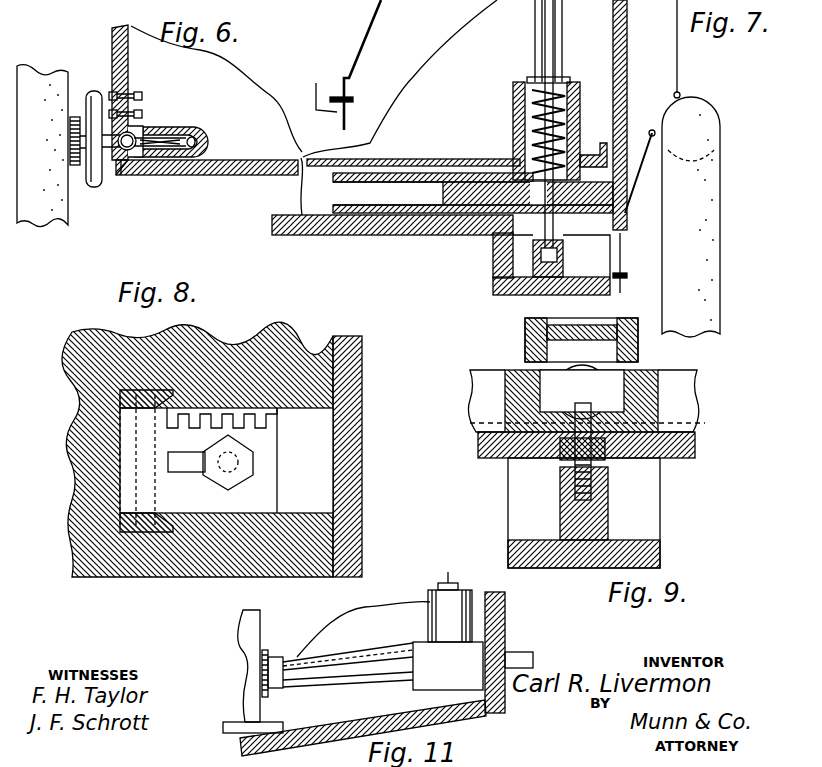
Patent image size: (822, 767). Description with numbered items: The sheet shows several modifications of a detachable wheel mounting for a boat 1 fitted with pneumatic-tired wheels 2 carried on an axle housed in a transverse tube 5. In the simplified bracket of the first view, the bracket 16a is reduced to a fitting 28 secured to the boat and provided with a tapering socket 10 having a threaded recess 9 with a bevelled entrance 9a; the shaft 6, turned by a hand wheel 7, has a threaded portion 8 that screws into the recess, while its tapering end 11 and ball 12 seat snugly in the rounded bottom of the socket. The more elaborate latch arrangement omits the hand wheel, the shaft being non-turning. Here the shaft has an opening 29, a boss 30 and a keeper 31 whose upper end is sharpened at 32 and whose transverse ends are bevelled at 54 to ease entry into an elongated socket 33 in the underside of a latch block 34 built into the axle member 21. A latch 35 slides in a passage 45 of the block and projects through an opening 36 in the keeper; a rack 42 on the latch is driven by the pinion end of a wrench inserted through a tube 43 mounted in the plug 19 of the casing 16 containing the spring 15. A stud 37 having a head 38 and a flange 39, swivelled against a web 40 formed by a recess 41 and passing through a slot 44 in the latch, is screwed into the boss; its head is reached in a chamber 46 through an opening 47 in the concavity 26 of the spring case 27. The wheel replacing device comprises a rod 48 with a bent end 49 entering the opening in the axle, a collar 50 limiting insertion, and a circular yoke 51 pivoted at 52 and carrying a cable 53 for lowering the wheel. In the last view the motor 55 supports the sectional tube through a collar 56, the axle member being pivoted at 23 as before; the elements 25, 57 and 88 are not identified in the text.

In FIG. 6, the boat 1 is at (111, 36).
In FIG. 7, the boat 1 is at (628, 44).
In FIG. 8, the boat 1 is at (350, 362).
In FIG. 11, the boat 1 is at (506, 612).
In FIG. 6, the pneumatic-tired wheel 2 is at (42, 136).
In FIG. 7, the tube 5 is at (355, 159).
In FIG. 11, the tube 5 is at (330, 662).
In FIG. 6, the shaft 6 is at (115, 172).
In FIG. 7, the shaft 6 is at (670, 283).
In FIG. 9, the shaft 6 is at (650, 556).
In FIG. 11, the shaft 6 is at (530, 652).
In FIG. 6, the hand wheel 7 is at (90, 185).
In FIG. 6, the threaded portion 8 is at (163, 174).
In FIG. 7, the threaded portion 8 is at (634, 206).
In FIG. 6, the threaded recess 9 is at (135, 137).
In FIG. 7, the threaded recess 9 is at (598, 127).
In FIG. 9, the threaded recess 9 is at (562, 320).
In FIG. 6, the bevelled entrance 9a is at (138, 162).
In FIG. 11, the bevelled entrance 9a is at (510, 672).
In FIG. 6, the tapering socket 10 is at (215, 133).
In FIG. 6, the tapering end 11 is at (186, 176).
In FIG. 6, the ball 12 is at (205, 142).
In FIG. 7, the spring 15 is at (582, 80).
In FIG. 7, the casing 16 is at (520, 84).
In FIG. 11, the casing 16 is at (428, 600).
In FIG. 6, the bracket 16a is at (140, 110).
In FIG. 11, the bracket 16a is at (478, 596).
In FIG. 7, the plug 19 is at (528, 78).
In FIG. 11, the plug 19 is at (447, 580).
In FIG. 7, the axle member 21 is at (388, 172).
In FIG. 9, the axle member 21 is at (555, 384).
In FIG. 11, the axle member 21 is at (370, 664).
In FIG. 11, the pivot 23 is at (300, 688).
In FIG. 7, the spring 25 is at (512, 166).
In FIG. 9, the concavity 26 is at (526, 350).
In FIG. 7, the spring case 27 is at (514, 120).
In FIG. 9, the spring case 27 is at (525, 322).
In FIG. 6, the fitting 28 is at (178, 130).
In FIG. 7, the opening 29 is at (630, 276).
In FIG. 7, the boss 30 is at (566, 258).
In FIG. 9, the boss 30 is at (612, 512).
In FIG. 7, the keeper 31 is at (512, 260).
In FIG. 9, the keeper 31 is at (640, 527).
In FIG. 7, the sharpened upper end 32 is at (490, 240).
In FIG. 7, the socket 33 is at (478, 226).
In FIG. 7, the latch block 34 is at (470, 176).
In FIG. 8, the latch 35 is at (128, 440).
In FIG. 7, the opening 36 is at (410, 236).
In FIG. 8, the opening 36 is at (148, 506).
In FIG. 9, the opening 36 is at (578, 421).
In FIG. 8, the stud 37 is at (123, 404).
In FIG. 9, the stud 37 is at (624, 468).
In FIG. 8, the head 38 is at (232, 480).
In FIG. 9, the flange 39 is at (606, 458).
In FIG. 9, the web 40 is at (568, 440).
In FIG. 9, the recess 41 is at (575, 430).
In FIG. 8, the rack 42 is at (220, 428).
In FIG. 9, the rack 42 is at (650, 376).
In FIG. 7, the tube 43 is at (536, 52).
In FIG. 8, the slot 44 is at (185, 452).
In FIG. 8, the passage 45 is at (312, 408).
In FIG. 9, the passage 45 is at (556, 440).
In FIG. 9, the chamber 46 is at (602, 386).
In FIG. 9, the opening 47 is at (620, 328).
In FIG. 7, the rod 48 is at (355, 36).
In FIG. 7, the bent end 49 is at (344, 92).
In FIG. 7, the collar 50 is at (680, 244).
In FIG. 7, the circular yoke 51 is at (662, 122).
In FIG. 7, the pivot 52 is at (644, 124).
In FIG. 7, the cable 53 is at (681, 62).
In FIG. 8, the bevel 54 is at (125, 394).
In FIG. 9, the bevel 54 is at (700, 440).
In FIG. 11, the motor 55 is at (258, 652).
In FIG. 11, the collar 56 is at (282, 666).
In FIG. 7, the link 57 is at (628, 230).
In FIG. 9, the plate 88 is at (612, 400).